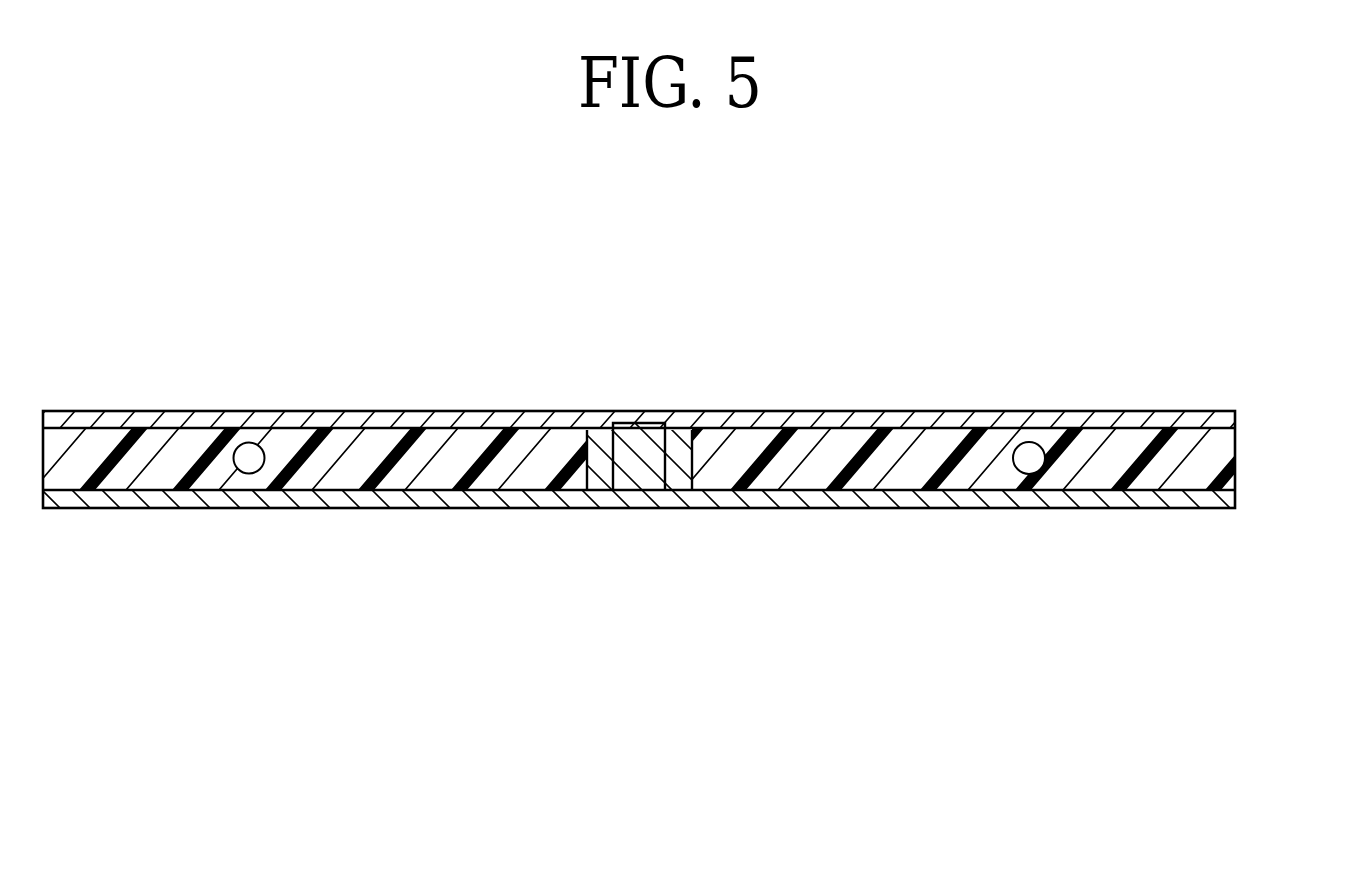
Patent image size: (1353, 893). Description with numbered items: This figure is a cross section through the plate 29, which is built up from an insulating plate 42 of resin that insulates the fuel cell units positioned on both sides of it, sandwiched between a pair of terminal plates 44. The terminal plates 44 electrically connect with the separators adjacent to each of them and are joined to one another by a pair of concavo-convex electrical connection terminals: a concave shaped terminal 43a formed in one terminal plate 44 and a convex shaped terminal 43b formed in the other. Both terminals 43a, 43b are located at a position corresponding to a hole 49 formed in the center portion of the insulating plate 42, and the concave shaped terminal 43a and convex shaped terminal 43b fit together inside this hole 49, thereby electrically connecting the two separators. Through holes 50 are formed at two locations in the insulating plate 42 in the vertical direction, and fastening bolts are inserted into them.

The plate 29 is at (1194, 406).
The insulating plate 42 is at (1218, 452).
The terminal plates 44 is at (740, 410).
The concave shaped terminal 43a is at (597, 458).
The convex shaped terminal 43b is at (650, 452).
The hole 49 is at (690, 455).
The through holes 50 is at (250, 447).